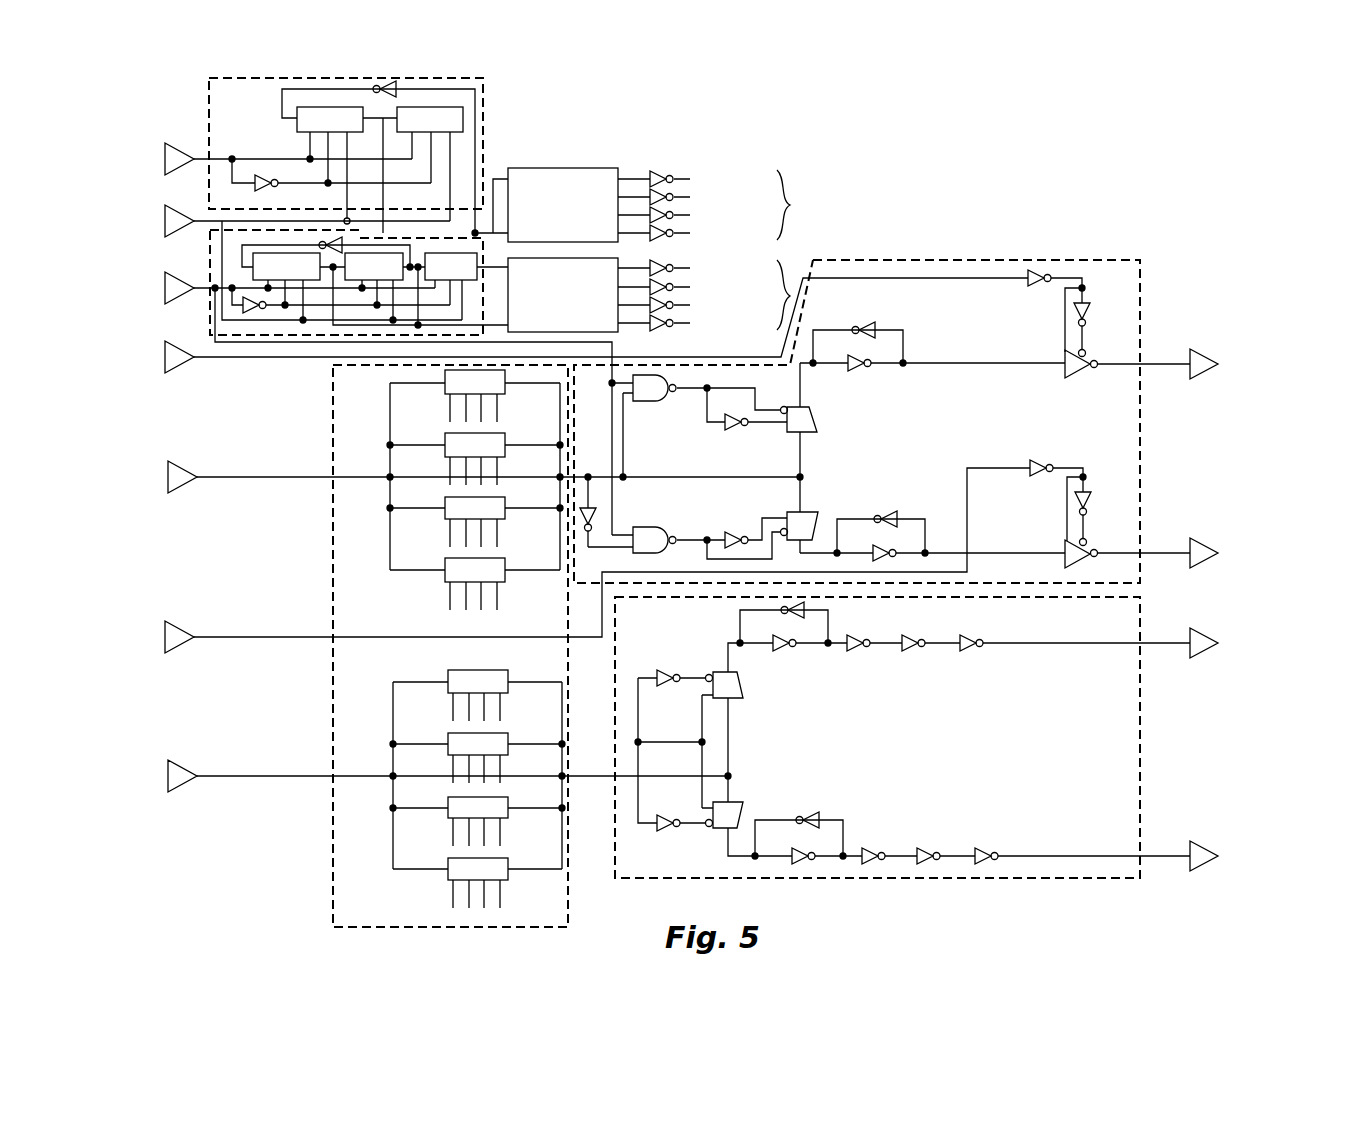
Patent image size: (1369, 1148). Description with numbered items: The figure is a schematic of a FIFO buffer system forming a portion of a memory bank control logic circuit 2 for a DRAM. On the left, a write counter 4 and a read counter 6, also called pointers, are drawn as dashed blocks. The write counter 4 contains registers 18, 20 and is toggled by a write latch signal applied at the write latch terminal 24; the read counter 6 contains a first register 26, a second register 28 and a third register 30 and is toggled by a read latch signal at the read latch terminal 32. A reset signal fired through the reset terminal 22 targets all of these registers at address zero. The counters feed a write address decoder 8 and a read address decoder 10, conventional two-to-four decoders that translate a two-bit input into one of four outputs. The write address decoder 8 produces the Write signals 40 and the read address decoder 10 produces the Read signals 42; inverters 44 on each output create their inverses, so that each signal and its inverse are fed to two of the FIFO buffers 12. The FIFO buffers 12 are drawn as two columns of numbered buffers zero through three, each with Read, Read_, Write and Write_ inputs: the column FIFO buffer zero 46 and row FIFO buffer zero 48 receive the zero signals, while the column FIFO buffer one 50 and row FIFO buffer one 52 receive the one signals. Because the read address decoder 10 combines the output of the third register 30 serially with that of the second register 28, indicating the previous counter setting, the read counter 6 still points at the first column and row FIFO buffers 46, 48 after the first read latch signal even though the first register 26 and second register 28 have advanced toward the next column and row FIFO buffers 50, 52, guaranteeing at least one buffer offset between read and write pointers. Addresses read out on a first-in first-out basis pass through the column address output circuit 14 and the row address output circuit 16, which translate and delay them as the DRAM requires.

The circuit 2 is at (905, 136).
The write counter 4 is at (485, 112).
The read counter 6 is at (212, 340).
The write address decoder 8 is at (588, 168).
The read address decoder 10 is at (625, 333).
The FIFO buffers 12 is at (333, 419).
The column address output circuit 14 is at (1000, 260).
The row address output circuit 16 is at (1142, 745).
The register 18 is at (330, 119).
The register 20 is at (430, 119).
The reset terminal 22 is at (170, 224).
The write latch terminal 24 is at (178, 145).
The first register 26 is at (286, 266).
The second register 28 is at (374, 266).
The third register 30 is at (451, 266).
The read latch terminal 32 is at (172, 296).
The write signals 40 is at (790, 205).
The read signals 42 is at (793, 282).
The inverters 44 is at (672, 233).
The column FIFO buffer 0 46 is at (445, 375).
The row FIFO buffer 0 48 is at (448, 675).
The column FIFO buffer 1 50 is at (445, 437).
The row FIFO buffer 1 52 is at (448, 737).